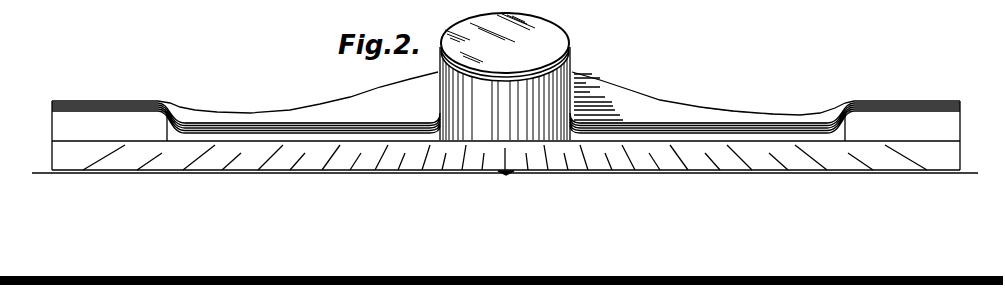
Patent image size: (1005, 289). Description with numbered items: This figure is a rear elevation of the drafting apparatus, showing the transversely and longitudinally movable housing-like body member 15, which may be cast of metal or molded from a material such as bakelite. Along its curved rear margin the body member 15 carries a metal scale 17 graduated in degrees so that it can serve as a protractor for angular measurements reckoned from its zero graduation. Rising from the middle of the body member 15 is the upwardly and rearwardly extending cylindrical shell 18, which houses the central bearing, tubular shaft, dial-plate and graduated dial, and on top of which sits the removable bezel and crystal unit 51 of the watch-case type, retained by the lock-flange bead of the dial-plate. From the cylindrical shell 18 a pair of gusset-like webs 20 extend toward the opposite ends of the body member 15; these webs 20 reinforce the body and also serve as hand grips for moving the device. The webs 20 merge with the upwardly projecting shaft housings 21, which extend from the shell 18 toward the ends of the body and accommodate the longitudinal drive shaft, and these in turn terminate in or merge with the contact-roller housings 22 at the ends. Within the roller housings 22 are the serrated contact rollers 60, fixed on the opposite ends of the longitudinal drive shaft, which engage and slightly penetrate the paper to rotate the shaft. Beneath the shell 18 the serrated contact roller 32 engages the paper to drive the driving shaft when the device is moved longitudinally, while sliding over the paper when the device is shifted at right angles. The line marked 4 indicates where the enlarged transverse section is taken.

The section line 4— 4 is at (505, 70).
The removable bezel and crystal unit 51 is at (571, 47).
The cylindrical shell 18 is at (577, 69).
The gusset-like webs 20 is at (362, 93).
The shaft housings 21 is at (332, 130).
The contact-roller housings 22 is at (106, 108).
The body member 15 is at (731, 114).
The scale 17 is at (695, 172).
The contact roller 32 is at (504, 175).
The contact rollers 60 is at (93, 174).